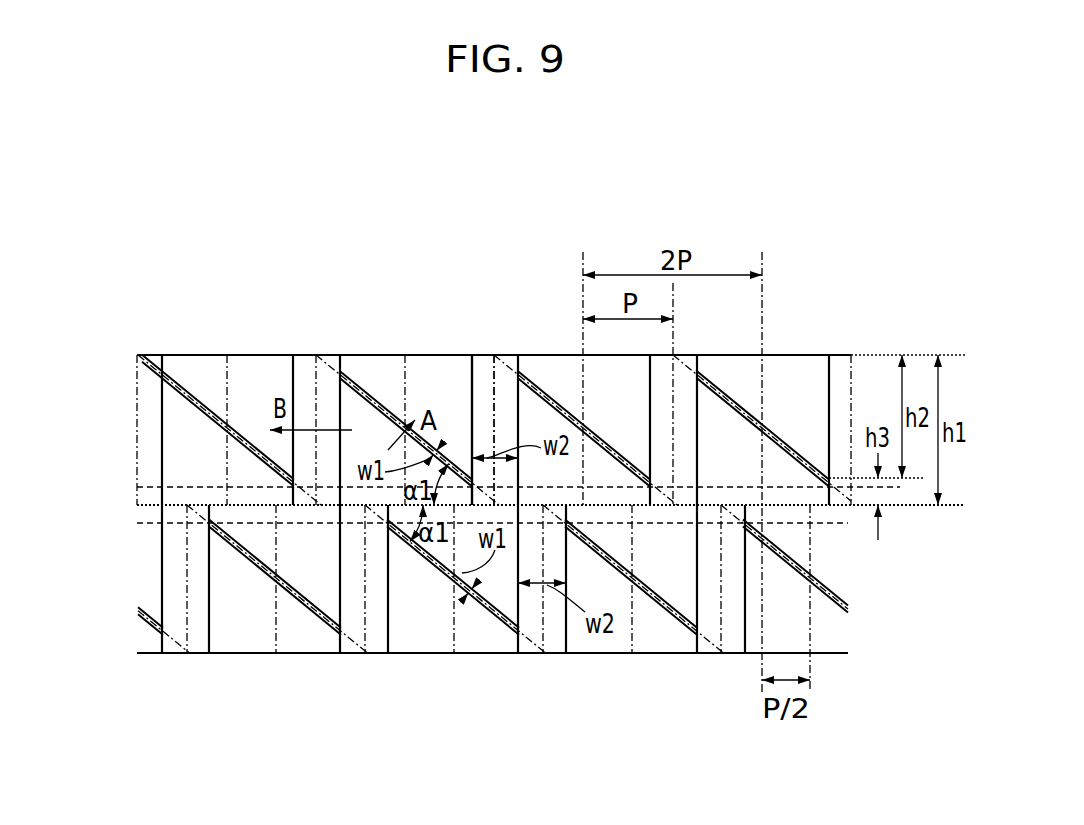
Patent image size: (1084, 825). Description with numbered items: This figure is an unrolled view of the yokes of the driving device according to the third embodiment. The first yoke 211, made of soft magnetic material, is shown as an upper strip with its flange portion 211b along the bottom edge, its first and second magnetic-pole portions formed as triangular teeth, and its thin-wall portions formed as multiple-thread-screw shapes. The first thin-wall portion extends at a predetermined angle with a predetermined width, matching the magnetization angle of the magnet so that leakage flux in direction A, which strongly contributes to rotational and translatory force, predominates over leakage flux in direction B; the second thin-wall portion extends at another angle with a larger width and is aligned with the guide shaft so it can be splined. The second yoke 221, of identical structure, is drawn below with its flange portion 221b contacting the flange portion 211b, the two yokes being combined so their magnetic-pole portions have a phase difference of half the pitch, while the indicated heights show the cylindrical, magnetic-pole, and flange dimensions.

The first yoke 211 is at (178, 372).
The flange portion 211b is at (178, 497).
The second yoke 221 is at (176, 634).
The flange portion 221b is at (163, 523).